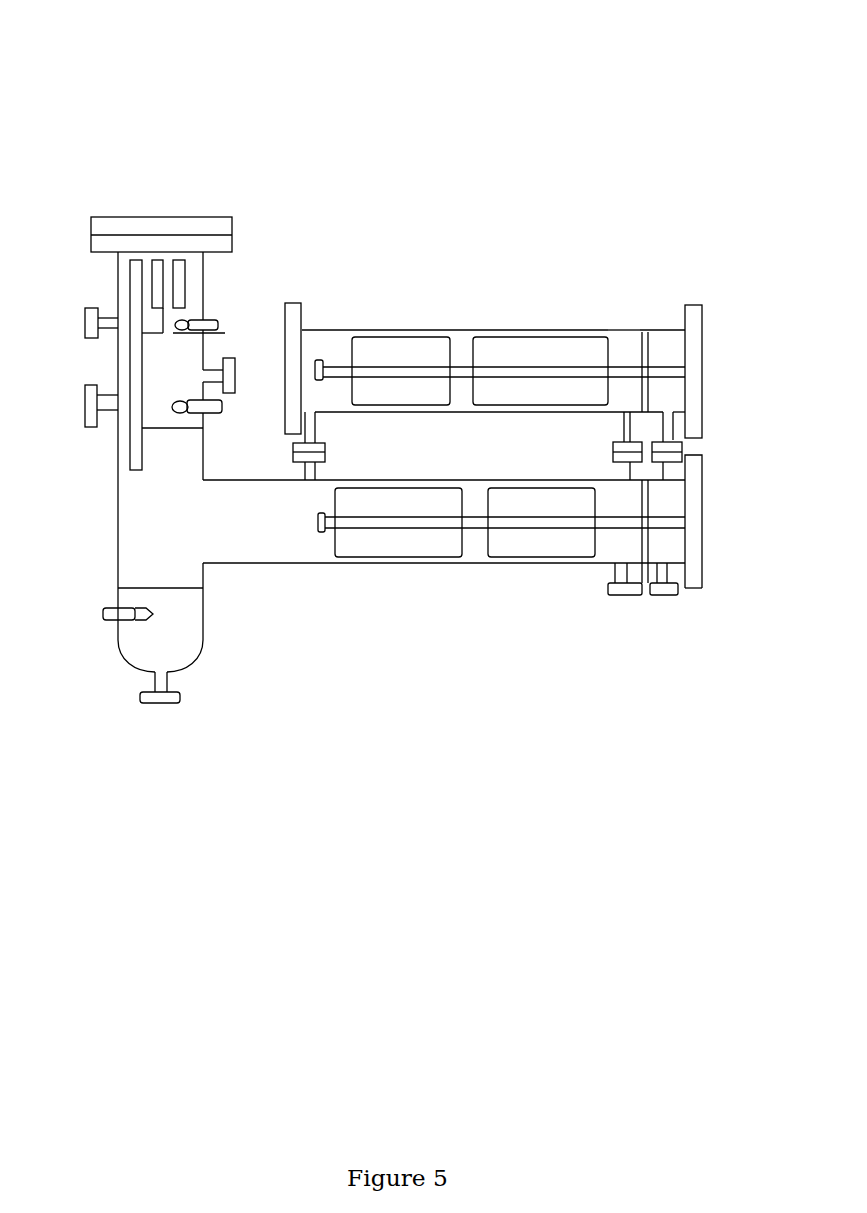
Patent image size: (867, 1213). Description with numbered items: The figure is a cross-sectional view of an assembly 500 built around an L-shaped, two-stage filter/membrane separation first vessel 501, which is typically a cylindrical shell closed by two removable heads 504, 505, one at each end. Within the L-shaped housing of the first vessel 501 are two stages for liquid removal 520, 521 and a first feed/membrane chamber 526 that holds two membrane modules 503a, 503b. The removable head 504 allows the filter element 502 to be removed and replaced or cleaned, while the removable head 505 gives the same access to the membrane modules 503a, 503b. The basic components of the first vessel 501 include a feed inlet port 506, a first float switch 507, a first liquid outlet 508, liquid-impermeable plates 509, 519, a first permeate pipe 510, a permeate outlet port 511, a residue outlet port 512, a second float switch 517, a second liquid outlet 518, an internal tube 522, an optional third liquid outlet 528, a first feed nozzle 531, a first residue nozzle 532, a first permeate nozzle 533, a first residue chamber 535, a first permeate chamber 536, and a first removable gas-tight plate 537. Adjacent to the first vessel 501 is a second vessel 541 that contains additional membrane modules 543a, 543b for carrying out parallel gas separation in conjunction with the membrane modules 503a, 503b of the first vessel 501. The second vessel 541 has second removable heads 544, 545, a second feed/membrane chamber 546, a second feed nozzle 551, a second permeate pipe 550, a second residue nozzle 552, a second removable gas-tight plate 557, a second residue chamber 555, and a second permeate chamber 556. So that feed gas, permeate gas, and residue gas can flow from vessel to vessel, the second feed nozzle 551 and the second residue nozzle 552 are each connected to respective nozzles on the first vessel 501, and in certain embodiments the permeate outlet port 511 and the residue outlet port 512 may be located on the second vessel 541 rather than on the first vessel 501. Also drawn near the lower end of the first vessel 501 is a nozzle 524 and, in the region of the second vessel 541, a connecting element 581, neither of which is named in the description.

The assembly 500 is at (398, 47).
The removable head 504 is at (232, 216).
The liquid removal stage 521 is at (120, 258).
The filter element 502 is at (180, 277).
The second float switch 517 is at (207, 317).
The liquid-impermeable plate 519 is at (220, 328).
The second liquid outlet 518 is at (85, 312).
The internal tube 522 is at (135, 335).
The feed inlet port 506 is at (233, 360).
The first float switch 507 is at (222, 403).
The liquid-impermeable plate 509 is at (203, 428).
The first liquid outlet 508 is at (85, 392).
The liquid removal stage 520 is at (123, 417).
The first feed/membrane chamber 526 is at (125, 492).
The outlet nozzle 524 is at (105, 615).
The optional third liquid outlet 528 is at (142, 703).
The second removable head 544 is at (287, 302).
The second feed/membrane chamber 546 is at (315, 340).
The membrane module 543a is at (367, 343).
The second permeate pipe 550 is at (423, 370).
The membrane module 543b is at (507, 338).
The second residue chamber 555 is at (612, 337).
The second removable gas-tight plate 557 is at (645, 337).
The second removable head 545 is at (700, 308).
The second permeate chamber 556 is at (673, 352).
The connecting pipe 581 is at (317, 424).
The first feed nozzle 531 is at (325, 455).
The second vessel 541 is at (475, 413).
The second residue nozzle 552 is at (623, 417).
The second feed nozzle 551 is at (643, 427).
The first residue nozzle 532 is at (613, 460).
The first permeate nozzle 533 is at (682, 450).
The first permeate chamber 536 is at (672, 502).
The membrane module 503a is at (357, 497).
The first permeate pipe 510 is at (433, 522).
The membrane module 503b is at (497, 498).
The first vessel 501 is at (460, 568).
The first residue chamber 535 is at (598, 562).
The residue outlet port 512 is at (605, 595).
The permeate outlet port 511 is at (670, 595).
The first removable gas-tight plate 537 is at (648, 580).
The removable head 505 is at (702, 590).